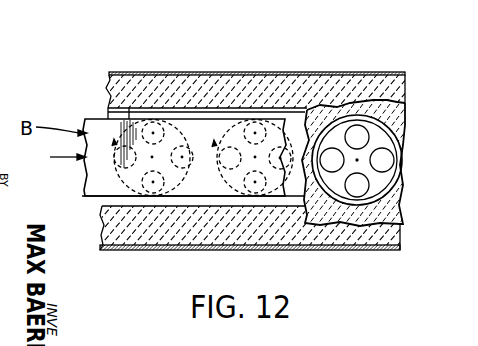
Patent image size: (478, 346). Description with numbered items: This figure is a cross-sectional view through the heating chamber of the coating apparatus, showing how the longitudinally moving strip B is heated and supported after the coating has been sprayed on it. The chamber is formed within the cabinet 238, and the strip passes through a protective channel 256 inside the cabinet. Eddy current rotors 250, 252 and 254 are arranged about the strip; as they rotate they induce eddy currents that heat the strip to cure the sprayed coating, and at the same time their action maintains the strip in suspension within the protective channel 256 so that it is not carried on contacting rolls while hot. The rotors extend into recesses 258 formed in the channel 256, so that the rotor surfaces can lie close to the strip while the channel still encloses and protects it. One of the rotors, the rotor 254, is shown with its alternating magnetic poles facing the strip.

The cabinet 238 is at (150, 72).
The rotor 250 is at (131, 118).
The rotor 252 is at (243, 124).
The rotor 254 is at (388, 129).
The protective channel 256 is at (197, 82).
The recess 258 is at (406, 155).